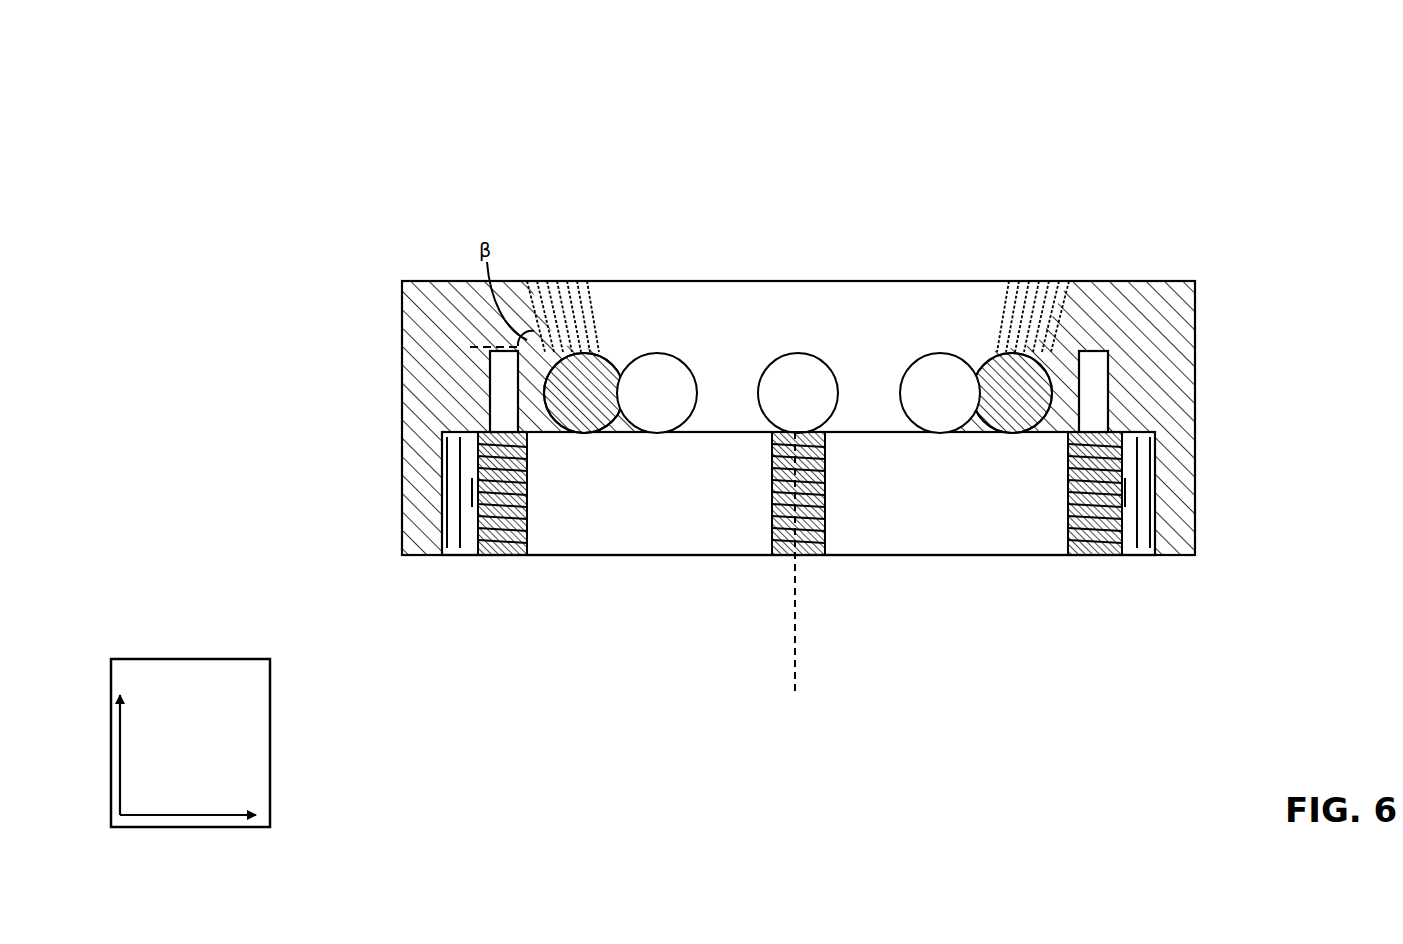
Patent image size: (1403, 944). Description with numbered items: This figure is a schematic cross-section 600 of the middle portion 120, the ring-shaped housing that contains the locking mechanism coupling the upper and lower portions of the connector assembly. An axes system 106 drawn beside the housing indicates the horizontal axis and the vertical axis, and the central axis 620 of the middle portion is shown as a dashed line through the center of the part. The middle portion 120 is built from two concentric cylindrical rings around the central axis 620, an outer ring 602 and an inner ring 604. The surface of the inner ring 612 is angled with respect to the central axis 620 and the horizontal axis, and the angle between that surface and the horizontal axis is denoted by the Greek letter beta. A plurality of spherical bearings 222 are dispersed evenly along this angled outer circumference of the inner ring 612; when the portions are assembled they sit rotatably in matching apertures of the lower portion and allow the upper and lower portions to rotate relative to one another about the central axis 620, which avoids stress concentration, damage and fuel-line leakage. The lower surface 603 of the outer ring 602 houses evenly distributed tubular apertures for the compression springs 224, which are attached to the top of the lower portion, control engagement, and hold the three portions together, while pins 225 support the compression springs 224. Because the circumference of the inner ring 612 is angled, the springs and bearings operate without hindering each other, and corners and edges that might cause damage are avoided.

The cross-section 600 is at (1245, 98).
The middle portion 120 is at (1245, 155).
The inner ring 604 is at (701, 316).
The surface of the inner ring 612 is at (1065, 303).
The outer ring 602 is at (638, 520).
The lower surface 603 is at (957, 555).
The pins 225 is at (490, 378).
The spherical bearings 222 is at (578, 354).
The compression springs 224 is at (479, 530).
The central axis 620 is at (795, 678).
The axes system 106 is at (146, 659).